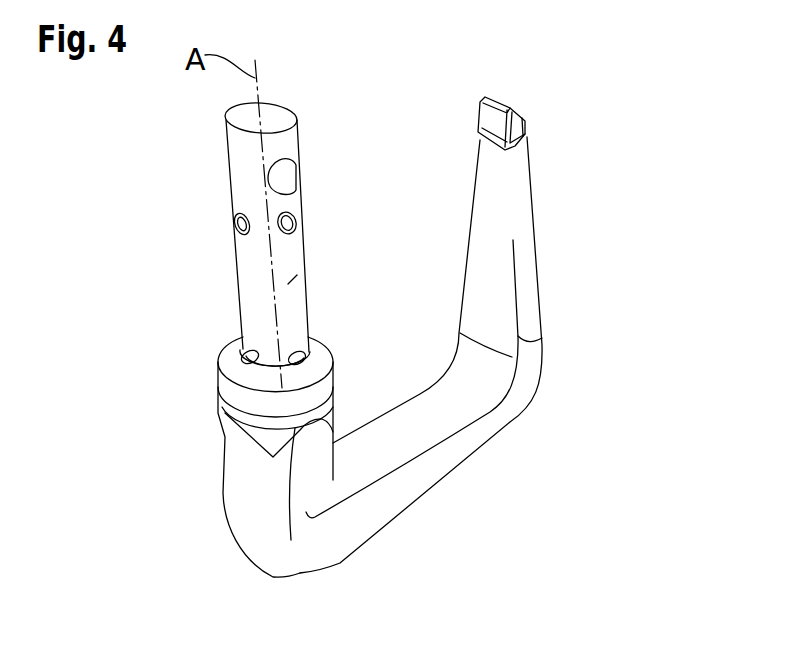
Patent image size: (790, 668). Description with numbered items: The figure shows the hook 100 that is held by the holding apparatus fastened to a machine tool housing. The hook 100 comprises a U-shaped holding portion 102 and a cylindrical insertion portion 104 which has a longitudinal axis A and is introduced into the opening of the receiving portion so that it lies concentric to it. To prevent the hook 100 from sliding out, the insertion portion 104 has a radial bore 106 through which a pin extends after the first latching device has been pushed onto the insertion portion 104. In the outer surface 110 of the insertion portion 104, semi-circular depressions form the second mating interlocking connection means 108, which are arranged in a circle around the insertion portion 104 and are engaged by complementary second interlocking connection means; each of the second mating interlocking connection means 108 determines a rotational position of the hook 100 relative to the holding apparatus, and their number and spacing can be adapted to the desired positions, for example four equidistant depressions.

The hook 100 is at (594, 130).
The U-shaped holding portion 102 is at (485, 433).
The cylindrical insertion portion 104 is at (242, 277).
The radial bore 106 is at (282, 177).
The second mating interlocking connection means 108 is at (237, 224).
The outer surface 110 is at (288, 284).